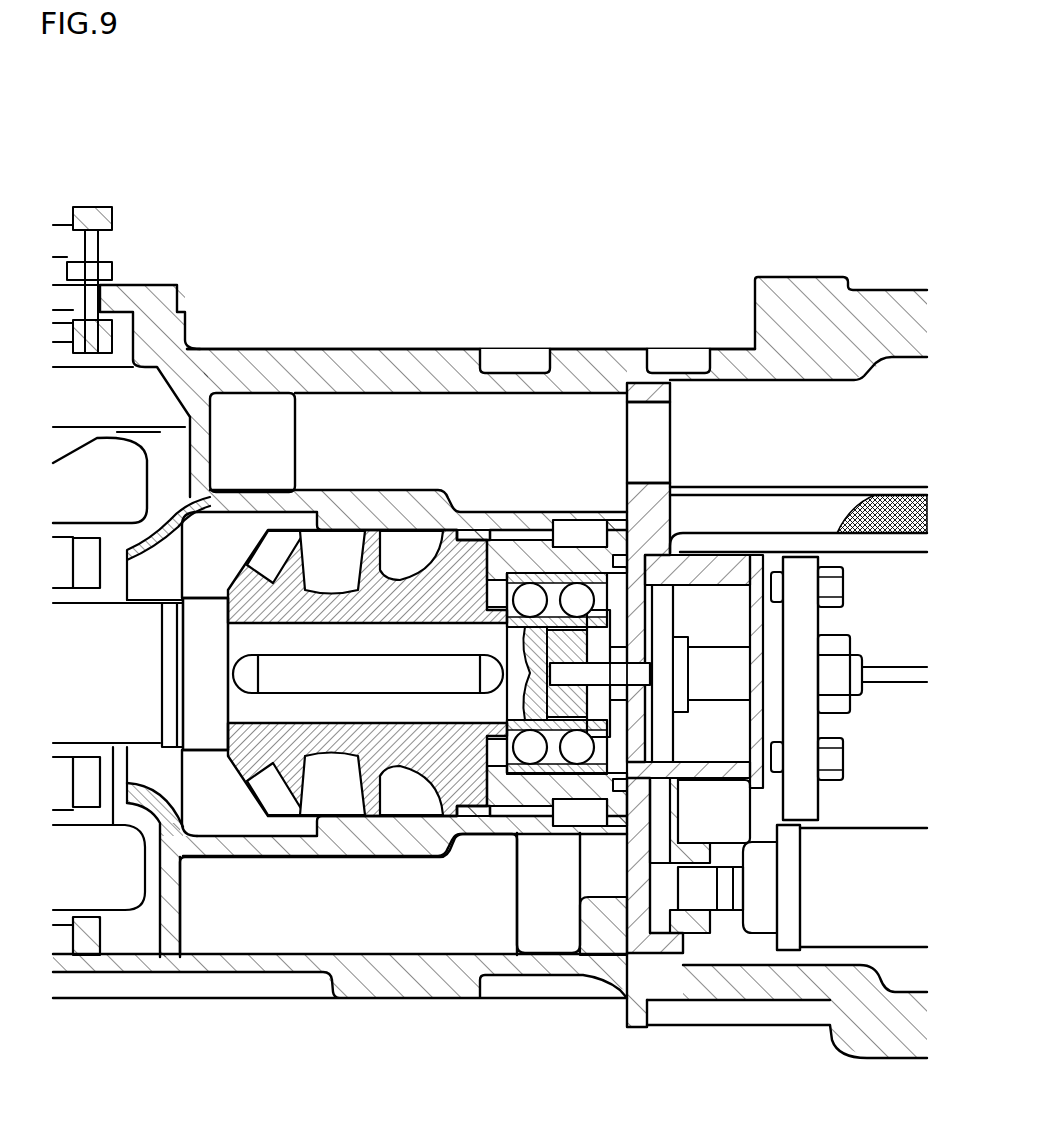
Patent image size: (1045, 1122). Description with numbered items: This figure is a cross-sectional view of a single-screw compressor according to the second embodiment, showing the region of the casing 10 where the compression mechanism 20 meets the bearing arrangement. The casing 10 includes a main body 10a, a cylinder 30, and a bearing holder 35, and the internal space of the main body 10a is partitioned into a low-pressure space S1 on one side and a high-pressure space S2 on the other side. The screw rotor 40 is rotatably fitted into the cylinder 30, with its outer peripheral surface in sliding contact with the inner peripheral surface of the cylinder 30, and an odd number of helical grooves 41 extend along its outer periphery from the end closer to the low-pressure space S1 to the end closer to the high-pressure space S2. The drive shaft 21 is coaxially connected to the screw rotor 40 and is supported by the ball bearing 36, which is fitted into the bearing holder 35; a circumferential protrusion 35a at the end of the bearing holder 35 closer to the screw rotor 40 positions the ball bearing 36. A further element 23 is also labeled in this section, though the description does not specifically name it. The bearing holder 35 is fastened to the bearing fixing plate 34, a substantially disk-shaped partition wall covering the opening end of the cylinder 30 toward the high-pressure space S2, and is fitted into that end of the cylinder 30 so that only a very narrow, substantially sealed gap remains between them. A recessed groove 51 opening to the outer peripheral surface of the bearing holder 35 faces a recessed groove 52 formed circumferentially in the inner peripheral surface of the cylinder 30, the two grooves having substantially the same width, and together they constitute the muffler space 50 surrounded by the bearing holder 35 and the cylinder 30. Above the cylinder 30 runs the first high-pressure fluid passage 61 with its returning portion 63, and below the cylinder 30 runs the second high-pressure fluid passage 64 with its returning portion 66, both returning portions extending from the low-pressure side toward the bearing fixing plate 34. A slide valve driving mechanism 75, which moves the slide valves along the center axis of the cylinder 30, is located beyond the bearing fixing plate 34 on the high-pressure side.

The casing 10 is at (882, 288).
The main body 10a is at (420, 350).
The compression mechanism 20 is at (250, 527).
The drive shaft 21 is at (113, 760).
The rotor core 23 is at (413, 540).
The cylinder 30 is at (382, 505).
The bearing fixing plate 34 is at (670, 513).
The bearing holder 35 is at (517, 553).
The circumferential protrusion 35a is at (488, 802).
The ball bearing 36 is at (536, 570).
The screw rotor 40 is at (232, 770).
The helical groove 41 is at (322, 557).
The muffler space 50 is at (572, 540).
The recessed groove 51 is at (605, 540).
The recessed groove 52 is at (567, 520).
The first high-pressure fluid passage 61 is at (360, 425).
The returning portion 63 is at (518, 420).
The second high-pressure fluid passage 64 is at (277, 935).
The returning portion 66 is at (403, 937).
The slide valve driving mechanism 75 is at (825, 624).
The low-pressure space S1 is at (167, 405).
The high-pressure space S2 is at (723, 398).